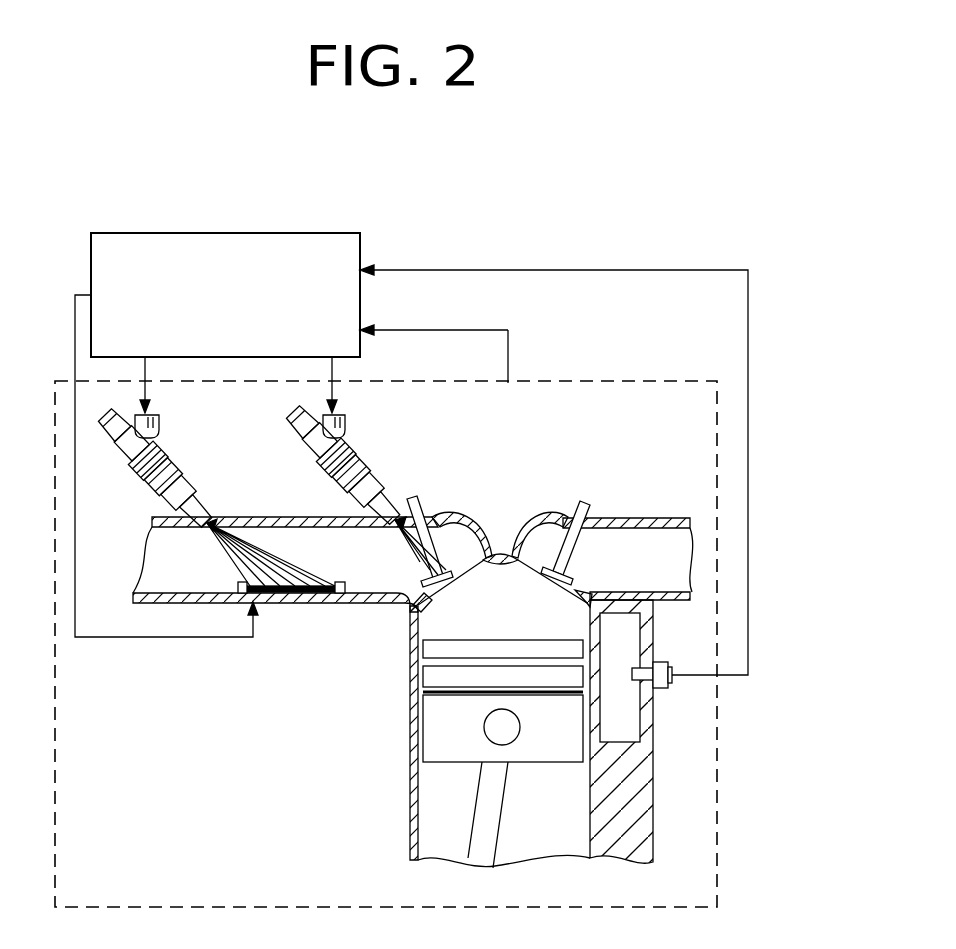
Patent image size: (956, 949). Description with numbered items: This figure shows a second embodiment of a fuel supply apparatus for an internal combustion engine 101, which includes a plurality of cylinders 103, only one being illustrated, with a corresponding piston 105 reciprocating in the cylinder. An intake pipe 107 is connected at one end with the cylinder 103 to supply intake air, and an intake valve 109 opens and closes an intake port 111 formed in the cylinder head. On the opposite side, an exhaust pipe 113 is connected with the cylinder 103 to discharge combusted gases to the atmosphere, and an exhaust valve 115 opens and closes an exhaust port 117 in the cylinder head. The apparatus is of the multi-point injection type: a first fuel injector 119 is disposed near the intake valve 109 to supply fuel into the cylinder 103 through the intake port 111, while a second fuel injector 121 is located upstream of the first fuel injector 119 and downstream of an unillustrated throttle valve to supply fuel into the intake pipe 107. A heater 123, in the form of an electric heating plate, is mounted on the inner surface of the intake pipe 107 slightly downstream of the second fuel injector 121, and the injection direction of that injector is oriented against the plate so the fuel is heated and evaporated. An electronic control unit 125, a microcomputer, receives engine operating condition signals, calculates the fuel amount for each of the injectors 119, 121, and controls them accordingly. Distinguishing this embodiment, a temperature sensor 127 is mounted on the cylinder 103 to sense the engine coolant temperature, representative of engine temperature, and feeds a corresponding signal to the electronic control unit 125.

The internal combustion engine 101 is at (718, 797).
The cylinder 103 is at (410, 822).
The piston 105 is at (543, 763).
The intake pipe 107 is at (378, 607).
The intake valve 109 is at (420, 500).
The intake port 111 is at (447, 596).
The exhaust pipe 113 is at (652, 518).
The exhaust valve 115 is at (582, 503).
The exhaust port 117 is at (562, 590).
The first fuel injector 119 is at (320, 470).
The second fuel injector 121 is at (137, 458).
The heater 123 is at (297, 605).
The electronic control unit 125 is at (360, 233).
The temperature sensor 127 is at (680, 684).